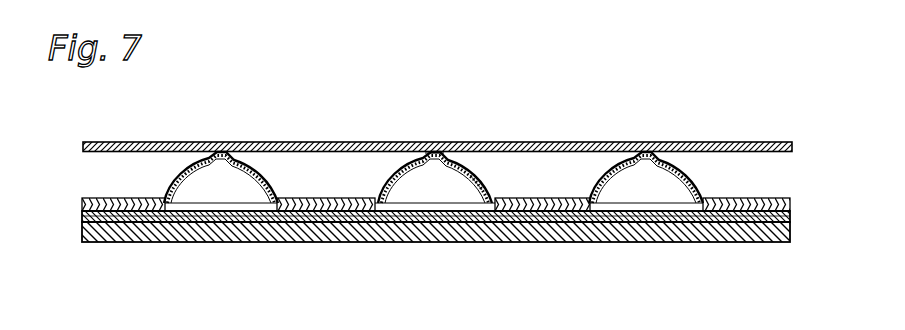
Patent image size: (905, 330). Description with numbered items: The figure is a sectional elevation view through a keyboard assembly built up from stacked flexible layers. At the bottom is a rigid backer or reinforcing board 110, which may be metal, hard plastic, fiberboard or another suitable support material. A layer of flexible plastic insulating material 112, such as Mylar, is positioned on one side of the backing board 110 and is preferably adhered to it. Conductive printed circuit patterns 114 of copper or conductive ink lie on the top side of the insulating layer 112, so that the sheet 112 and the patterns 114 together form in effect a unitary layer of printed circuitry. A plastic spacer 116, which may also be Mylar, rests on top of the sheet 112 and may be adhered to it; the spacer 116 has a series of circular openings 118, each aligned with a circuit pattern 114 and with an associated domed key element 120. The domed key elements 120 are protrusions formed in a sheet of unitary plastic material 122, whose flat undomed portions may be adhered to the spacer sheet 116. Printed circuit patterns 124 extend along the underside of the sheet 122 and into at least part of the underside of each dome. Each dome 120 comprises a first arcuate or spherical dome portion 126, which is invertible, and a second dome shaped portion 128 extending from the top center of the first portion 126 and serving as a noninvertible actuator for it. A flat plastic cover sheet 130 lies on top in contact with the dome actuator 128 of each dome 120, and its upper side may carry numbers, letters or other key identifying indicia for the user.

The backing board 110 is at (343, 241).
The insulating layer 112 is at (437, 218).
The conductive printed circuit patterns 114 is at (230, 212).
The plastic spacer 116 is at (518, 204).
The circular openings 118 is at (185, 216).
The domed key element 120 is at (266, 162).
The unitary plastic sheet 122 is at (340, 184).
The printed circuit patterns 124 is at (263, 185).
The first dome portion 126 is at (481, 183).
The second dome portion 128 is at (450, 152).
The cover sheet 130 is at (598, 142).